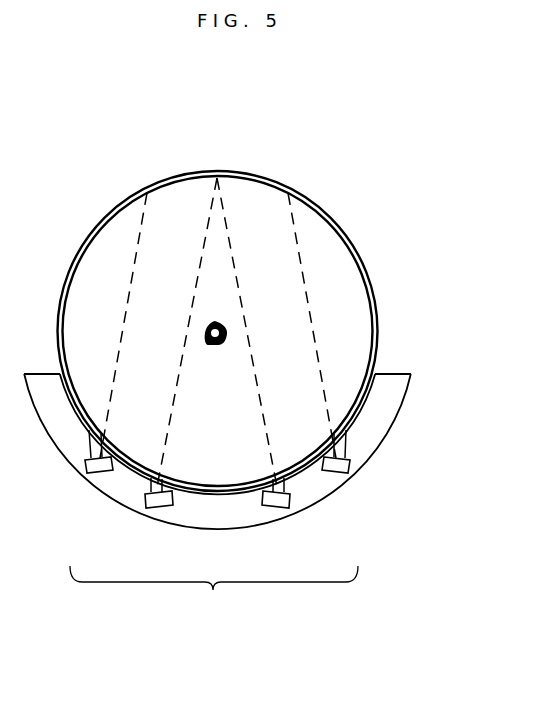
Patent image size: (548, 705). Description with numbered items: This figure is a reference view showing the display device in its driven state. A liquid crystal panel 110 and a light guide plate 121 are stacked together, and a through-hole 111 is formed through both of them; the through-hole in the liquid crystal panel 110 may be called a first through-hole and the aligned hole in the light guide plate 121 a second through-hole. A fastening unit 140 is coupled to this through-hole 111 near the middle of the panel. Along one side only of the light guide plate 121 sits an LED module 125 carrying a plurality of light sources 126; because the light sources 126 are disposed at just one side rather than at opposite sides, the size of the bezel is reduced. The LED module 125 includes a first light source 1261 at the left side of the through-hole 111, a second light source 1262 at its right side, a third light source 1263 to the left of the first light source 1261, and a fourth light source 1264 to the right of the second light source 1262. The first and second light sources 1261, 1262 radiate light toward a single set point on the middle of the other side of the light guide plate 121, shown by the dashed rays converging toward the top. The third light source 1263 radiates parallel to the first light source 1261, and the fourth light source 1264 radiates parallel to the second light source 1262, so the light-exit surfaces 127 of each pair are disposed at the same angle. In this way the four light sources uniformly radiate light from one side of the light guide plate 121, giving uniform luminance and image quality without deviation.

The liquid crystal panel 110 is at (117, 252).
The light guide plate 121 is at (362, 258).
The through-hole 111 is at (228, 333).
The fastening unit 140 is at (218, 346).
The LED module 125 is at (395, 420).
The light-exit surfaces 127 is at (158, 480).
The light sources 126 is at (214, 595).
The first light source 1261 is at (157, 509).
The second light source 1262 is at (276, 509).
The third light source 1263 is at (97, 476).
The fourth light source 1264 is at (338, 474).